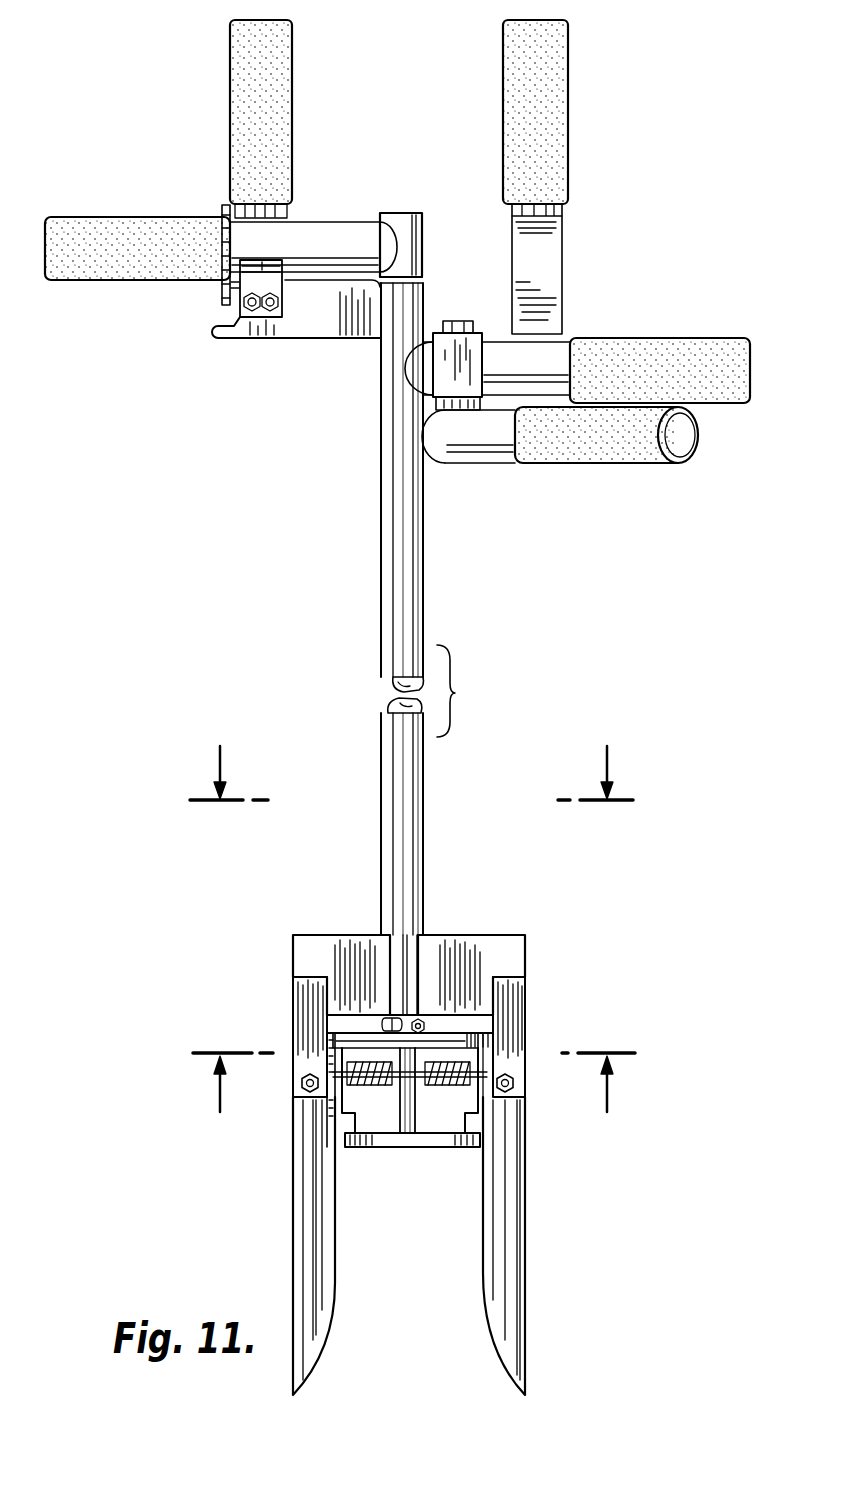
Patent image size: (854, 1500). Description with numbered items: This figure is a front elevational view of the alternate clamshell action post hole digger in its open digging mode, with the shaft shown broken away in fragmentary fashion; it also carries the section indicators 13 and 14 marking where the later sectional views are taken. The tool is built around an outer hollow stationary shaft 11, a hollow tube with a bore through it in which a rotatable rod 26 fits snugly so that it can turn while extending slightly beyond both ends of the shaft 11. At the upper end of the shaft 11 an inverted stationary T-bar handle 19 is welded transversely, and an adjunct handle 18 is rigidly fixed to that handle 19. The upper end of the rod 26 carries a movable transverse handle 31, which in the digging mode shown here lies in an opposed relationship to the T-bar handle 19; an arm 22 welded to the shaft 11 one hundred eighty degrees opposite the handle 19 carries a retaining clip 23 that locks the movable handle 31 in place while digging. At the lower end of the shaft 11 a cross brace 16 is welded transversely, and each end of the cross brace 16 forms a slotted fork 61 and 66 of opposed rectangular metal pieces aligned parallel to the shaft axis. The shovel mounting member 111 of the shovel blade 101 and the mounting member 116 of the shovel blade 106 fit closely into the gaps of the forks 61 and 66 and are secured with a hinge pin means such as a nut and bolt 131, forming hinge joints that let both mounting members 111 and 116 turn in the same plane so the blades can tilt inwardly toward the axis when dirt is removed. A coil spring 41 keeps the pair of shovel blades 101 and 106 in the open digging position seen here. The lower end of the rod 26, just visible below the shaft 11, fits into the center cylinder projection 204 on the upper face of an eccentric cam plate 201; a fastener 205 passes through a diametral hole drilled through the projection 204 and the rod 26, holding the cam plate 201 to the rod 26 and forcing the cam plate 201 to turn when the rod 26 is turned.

The outer hollow stationary shaft 11 is at (380, 593).
The section line 13- 13 is at (411, 760).
The section line 14- 14 is at (414, 1100).
The cross brace 16 is at (505, 933).
The adjunct handle 18 is at (580, 463).
The inverted T-bar handle 19 is at (712, 405).
The arm 22 is at (313, 325).
The retaining clip 23 is at (223, 283).
The rotatable rod 26 is at (392, 690).
The movable transverse handle 31 is at (45, 216).
The coil spring 41 is at (377, 1150).
The slotted fork 61 is at (303, 990).
The slotted fork 66 is at (510, 1010).
The shovel blade 101 is at (295, 1242).
The shovel blade 106 is at (527, 1208).
The shovel mounting member 111 is at (327, 1060).
The shovel mounting member 116 is at (488, 1042).
The nut and bolt 131 is at (300, 1085).
The eccentric cam plate 201 is at (472, 1040).
The center cylinder projection 204 is at (392, 1018).
The fastener 205 is at (425, 1020).